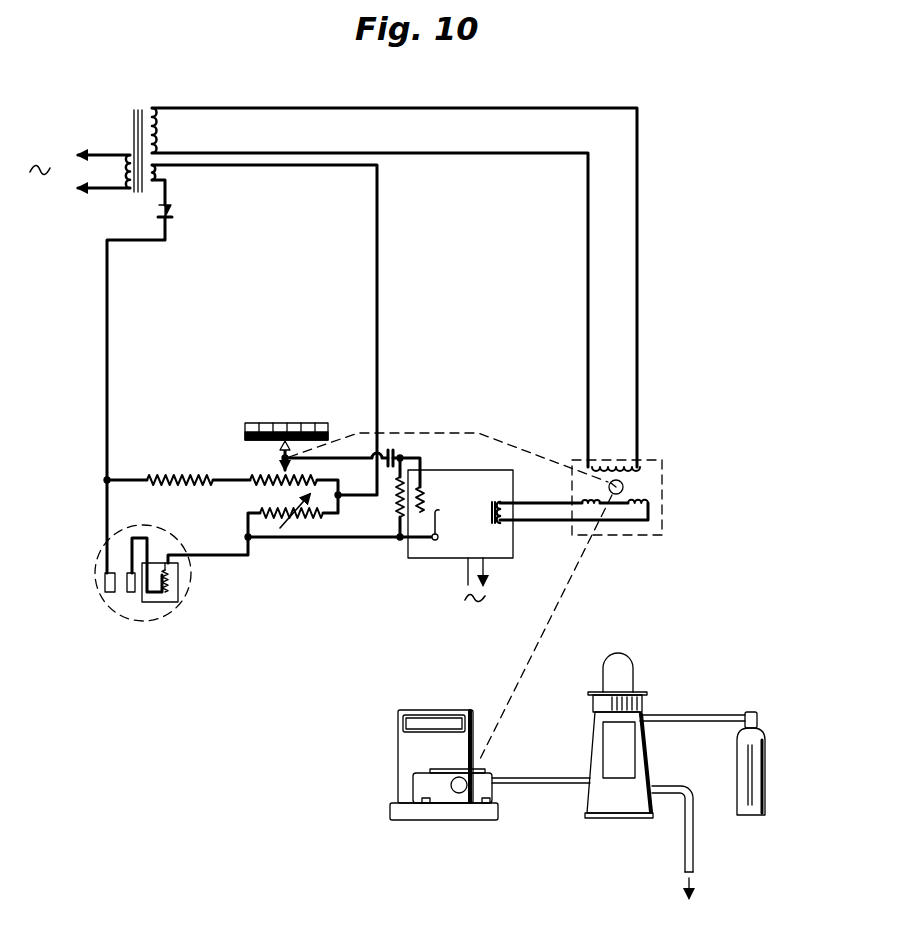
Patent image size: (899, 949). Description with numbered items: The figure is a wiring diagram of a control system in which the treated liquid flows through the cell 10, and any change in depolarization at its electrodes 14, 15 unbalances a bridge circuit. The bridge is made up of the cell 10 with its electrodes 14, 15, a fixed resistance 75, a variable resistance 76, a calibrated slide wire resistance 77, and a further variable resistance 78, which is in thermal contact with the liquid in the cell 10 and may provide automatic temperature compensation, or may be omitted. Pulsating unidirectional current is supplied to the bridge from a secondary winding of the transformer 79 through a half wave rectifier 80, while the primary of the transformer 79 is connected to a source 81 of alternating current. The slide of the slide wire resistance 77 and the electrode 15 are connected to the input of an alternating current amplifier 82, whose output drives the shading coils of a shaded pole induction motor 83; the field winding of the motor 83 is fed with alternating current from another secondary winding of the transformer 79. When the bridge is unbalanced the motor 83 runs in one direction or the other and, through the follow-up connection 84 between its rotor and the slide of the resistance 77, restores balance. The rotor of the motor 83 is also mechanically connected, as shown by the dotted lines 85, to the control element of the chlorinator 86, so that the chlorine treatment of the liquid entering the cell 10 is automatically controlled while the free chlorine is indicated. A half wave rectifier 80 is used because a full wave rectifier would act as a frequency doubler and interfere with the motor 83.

The cell 10 is at (97, 556).
The electrode 14 is at (105, 586).
The electrode 15 is at (126, 590).
The fixed resistance 75 is at (176, 477).
The variable resistance 76 is at (305, 516).
The calibrated slide wire resistance 77 is at (268, 484).
The variable resistance 78 is at (168, 606).
The transformer 79 is at (137, 110).
The half wave rectifier 80 is at (175, 213).
The source of alternating current 81 is at (95, 187).
The alternating current amplifier 82 is at (428, 554).
The shaded pole induction motor 83 is at (656, 486).
The follow-up connection 84 is at (481, 433).
The mechanical connection 85 is at (555, 607).
The chlorinator 86 is at (577, 775).